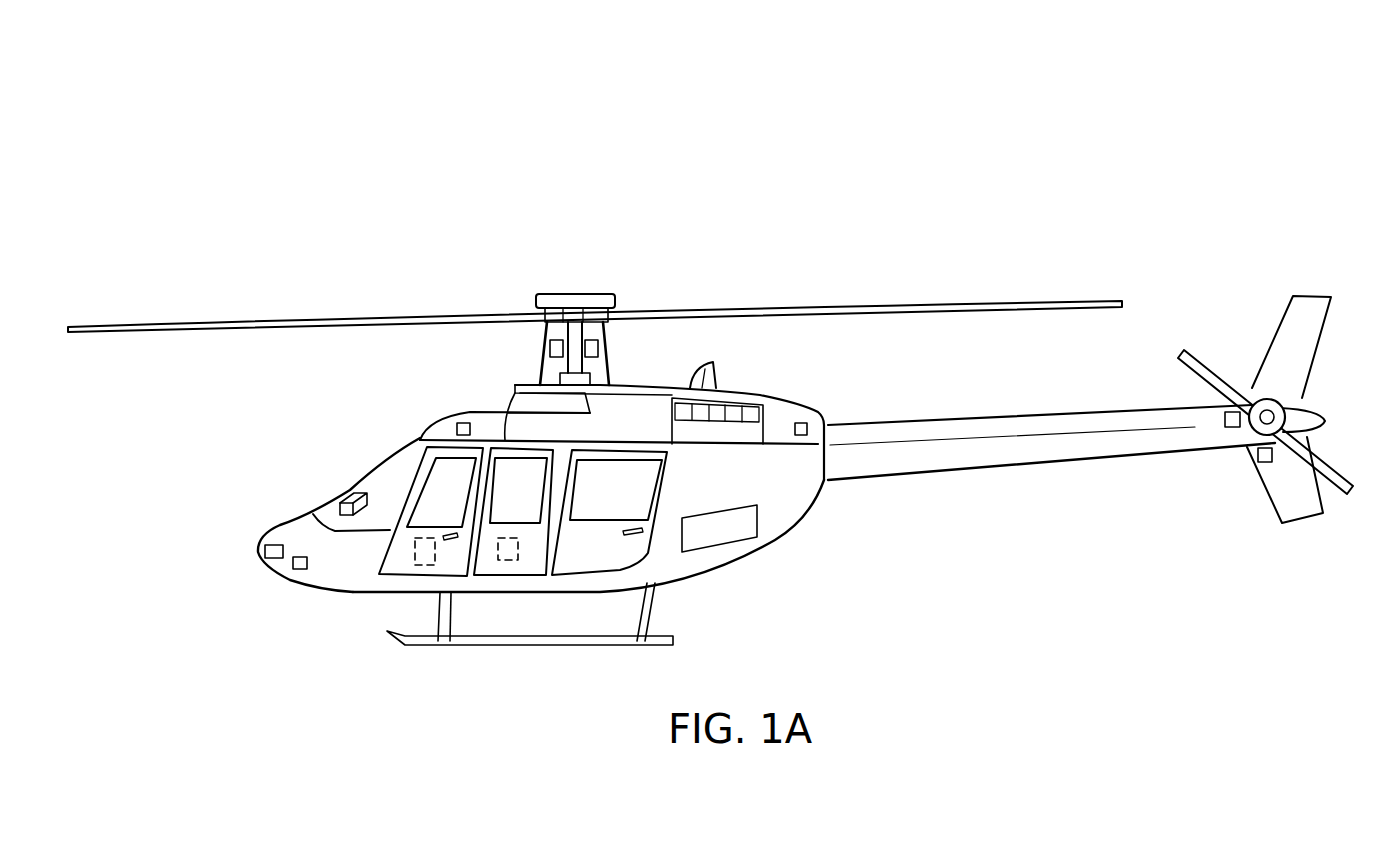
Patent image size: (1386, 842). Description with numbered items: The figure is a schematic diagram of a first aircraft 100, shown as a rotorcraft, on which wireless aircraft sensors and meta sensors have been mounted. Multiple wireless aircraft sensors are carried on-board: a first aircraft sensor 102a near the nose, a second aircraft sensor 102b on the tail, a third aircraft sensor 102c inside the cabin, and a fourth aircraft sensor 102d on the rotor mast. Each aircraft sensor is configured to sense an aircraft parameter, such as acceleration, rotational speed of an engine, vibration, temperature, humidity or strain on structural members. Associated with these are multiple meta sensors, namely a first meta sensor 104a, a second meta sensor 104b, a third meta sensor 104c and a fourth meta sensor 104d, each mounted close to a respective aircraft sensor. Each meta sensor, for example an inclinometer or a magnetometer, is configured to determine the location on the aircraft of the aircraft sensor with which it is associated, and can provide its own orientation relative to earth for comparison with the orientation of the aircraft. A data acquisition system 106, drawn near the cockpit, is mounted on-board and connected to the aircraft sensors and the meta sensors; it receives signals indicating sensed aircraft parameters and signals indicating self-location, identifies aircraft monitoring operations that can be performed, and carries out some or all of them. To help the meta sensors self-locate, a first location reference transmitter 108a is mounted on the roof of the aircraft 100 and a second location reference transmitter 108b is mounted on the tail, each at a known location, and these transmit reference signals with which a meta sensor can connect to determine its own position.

The first aircraft 100 is at (313, 150).
The first aircraft sensor 102a is at (275, 559).
The second aircraft sensor 102b is at (1225, 420).
The third aircraft sensor 102c is at (512, 561).
The fourth aircraft sensor 102d is at (600, 348).
The first meta sensor 104a is at (310, 566).
The second meta sensor 104b is at (1266, 462).
The third meta sensor 104c is at (420, 564).
The fourth meta sensor 104d is at (549, 349).
The data acquisition system 106 is at (350, 498).
The first location reference transmitter 108a is at (458, 423).
The second location reference transmitter 108b is at (803, 423).